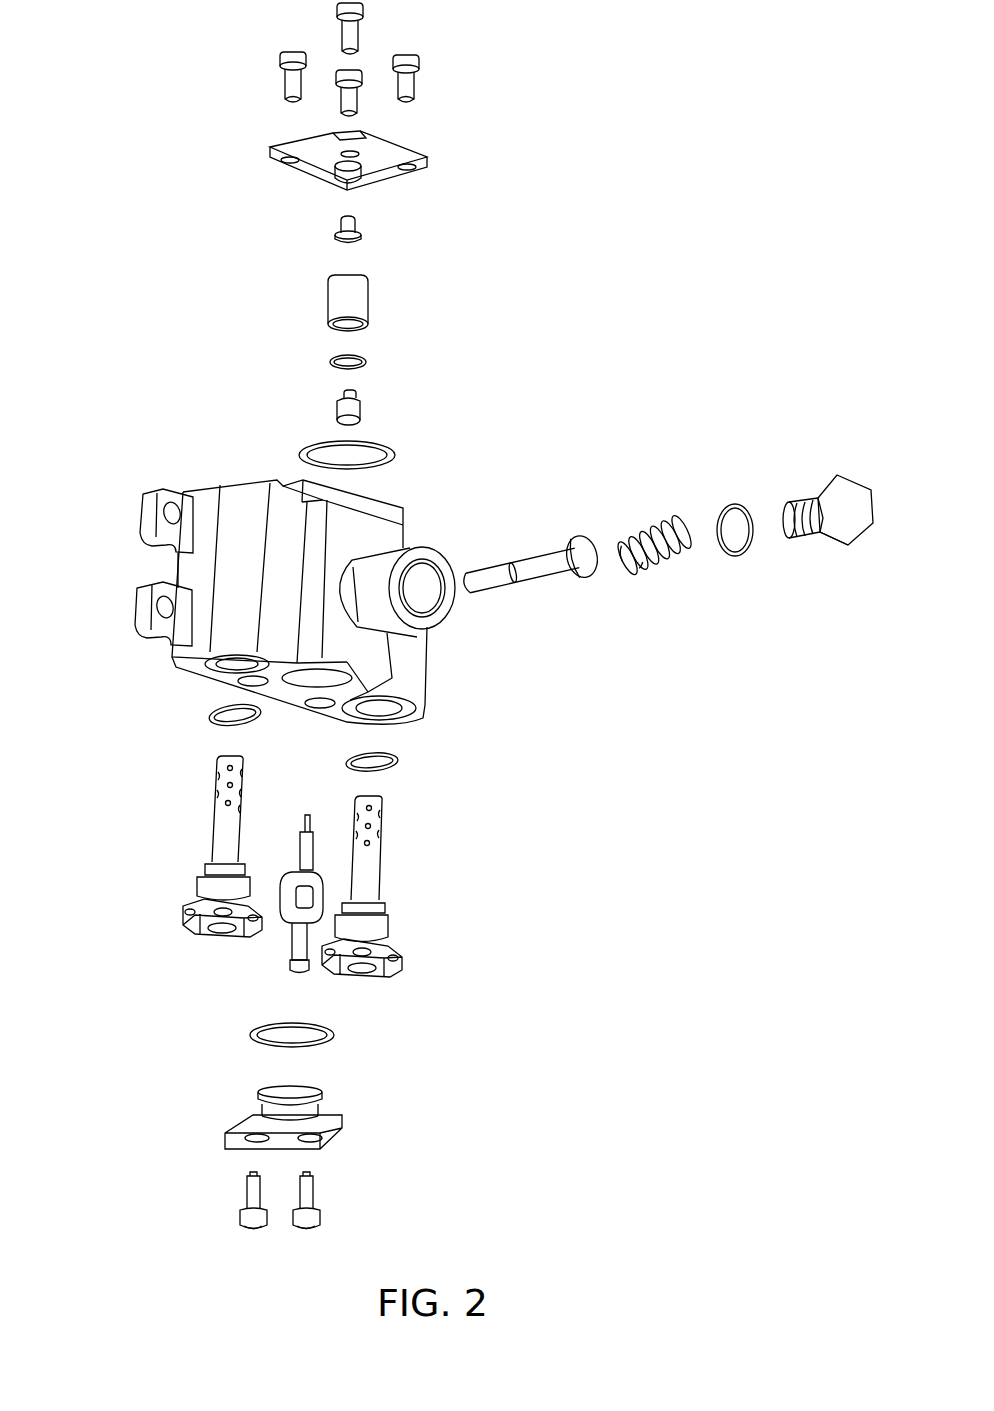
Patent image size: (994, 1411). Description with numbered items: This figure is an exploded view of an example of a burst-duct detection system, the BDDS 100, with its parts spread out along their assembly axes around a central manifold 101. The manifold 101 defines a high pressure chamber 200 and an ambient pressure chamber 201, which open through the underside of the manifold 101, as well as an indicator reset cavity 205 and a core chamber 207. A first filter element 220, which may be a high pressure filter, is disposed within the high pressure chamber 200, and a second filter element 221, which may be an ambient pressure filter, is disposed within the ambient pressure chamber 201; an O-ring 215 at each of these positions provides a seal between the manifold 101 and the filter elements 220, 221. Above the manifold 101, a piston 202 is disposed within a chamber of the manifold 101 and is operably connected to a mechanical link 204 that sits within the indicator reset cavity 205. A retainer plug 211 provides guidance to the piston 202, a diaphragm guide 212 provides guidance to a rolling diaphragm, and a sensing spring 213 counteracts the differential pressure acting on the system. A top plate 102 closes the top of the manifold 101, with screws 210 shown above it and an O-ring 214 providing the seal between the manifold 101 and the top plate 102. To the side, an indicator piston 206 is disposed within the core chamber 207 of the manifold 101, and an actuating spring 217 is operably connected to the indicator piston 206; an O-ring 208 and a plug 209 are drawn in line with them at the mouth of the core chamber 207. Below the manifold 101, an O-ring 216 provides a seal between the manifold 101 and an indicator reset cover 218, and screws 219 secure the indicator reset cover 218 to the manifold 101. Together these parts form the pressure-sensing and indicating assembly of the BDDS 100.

The BDDS 100 is at (640, 257).
The manifold 101 is at (242, 568).
The top plate 102 is at (387, 163).
The high pressure chamber 200 is at (385, 712).
The ambient pressure chamber 201 is at (237, 668).
The piston 202 is at (356, 300).
The mechanical link 204 is at (292, 948).
The indicator reset cavity 205 is at (300, 681).
The indicator piston 206 is at (535, 556).
The core chamber 207 is at (422, 592).
The O-ring 208 is at (733, 502).
The plug 209 is at (834, 477).
The screws 210 is at (358, 31).
The retainer plug 211 is at (336, 226).
The diaphragm guide 212 is at (330, 360).
The sensing spring 213 is at (362, 407).
The O-ring 214 is at (303, 444).
The O-ring 215 is at (228, 727).
The O-ring 216 is at (332, 1030).
The actuating spring 217 is at (655, 566).
The indicator reset cover 218 is at (250, 1120).
The screws 219 is at (322, 1213).
The first filter element 220 is at (365, 876).
The second filter element 221 is at (220, 834).